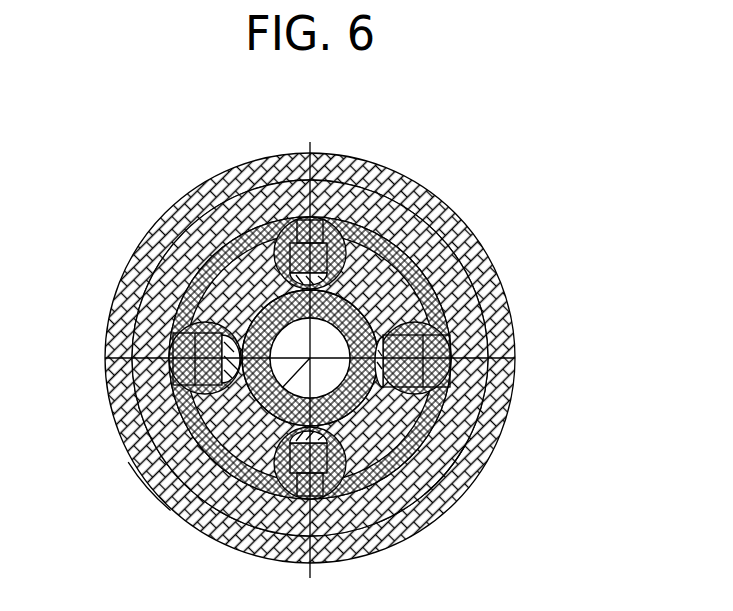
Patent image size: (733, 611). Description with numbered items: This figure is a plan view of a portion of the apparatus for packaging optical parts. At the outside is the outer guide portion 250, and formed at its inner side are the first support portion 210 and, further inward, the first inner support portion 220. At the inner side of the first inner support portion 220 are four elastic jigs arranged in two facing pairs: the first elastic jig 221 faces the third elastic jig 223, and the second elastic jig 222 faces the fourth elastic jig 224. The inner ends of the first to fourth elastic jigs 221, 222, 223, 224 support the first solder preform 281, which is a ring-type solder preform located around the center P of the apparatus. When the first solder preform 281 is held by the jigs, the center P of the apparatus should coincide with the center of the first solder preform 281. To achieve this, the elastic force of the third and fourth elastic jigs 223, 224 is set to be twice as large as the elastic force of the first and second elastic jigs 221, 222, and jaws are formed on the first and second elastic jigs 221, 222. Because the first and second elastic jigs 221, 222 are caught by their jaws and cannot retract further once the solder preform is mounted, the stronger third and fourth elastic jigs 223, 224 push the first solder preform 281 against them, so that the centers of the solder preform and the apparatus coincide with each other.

The outer guide portion 250 is at (460, 229).
The first support portion 210 is at (473, 282).
The first inner support portion 220 is at (450, 317).
The first elastic jig 221 is at (121, 437).
The second elastic jig 222 is at (356, 214).
The third elastic jig 223 is at (450, 397).
The fourth elastic jig 224 is at (232, 553).
The first solder preform 281 is at (460, 477).
The center of the apparatus P is at (167, 517).